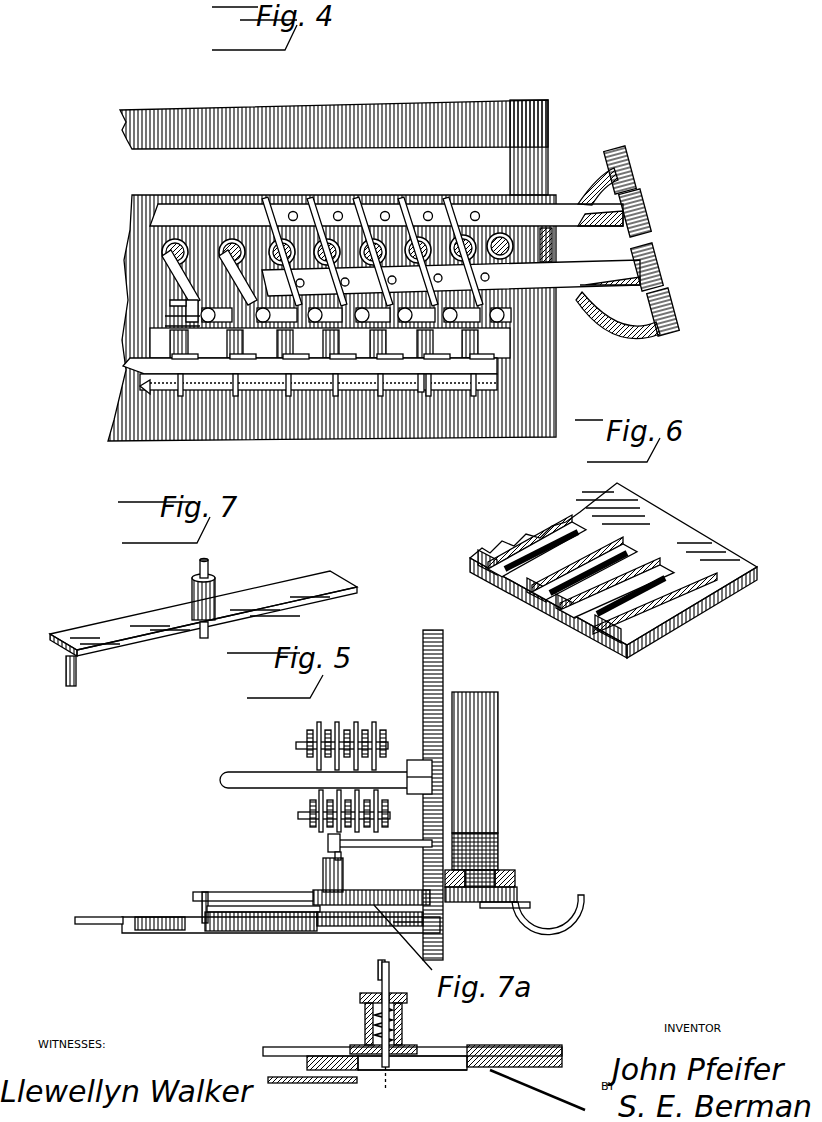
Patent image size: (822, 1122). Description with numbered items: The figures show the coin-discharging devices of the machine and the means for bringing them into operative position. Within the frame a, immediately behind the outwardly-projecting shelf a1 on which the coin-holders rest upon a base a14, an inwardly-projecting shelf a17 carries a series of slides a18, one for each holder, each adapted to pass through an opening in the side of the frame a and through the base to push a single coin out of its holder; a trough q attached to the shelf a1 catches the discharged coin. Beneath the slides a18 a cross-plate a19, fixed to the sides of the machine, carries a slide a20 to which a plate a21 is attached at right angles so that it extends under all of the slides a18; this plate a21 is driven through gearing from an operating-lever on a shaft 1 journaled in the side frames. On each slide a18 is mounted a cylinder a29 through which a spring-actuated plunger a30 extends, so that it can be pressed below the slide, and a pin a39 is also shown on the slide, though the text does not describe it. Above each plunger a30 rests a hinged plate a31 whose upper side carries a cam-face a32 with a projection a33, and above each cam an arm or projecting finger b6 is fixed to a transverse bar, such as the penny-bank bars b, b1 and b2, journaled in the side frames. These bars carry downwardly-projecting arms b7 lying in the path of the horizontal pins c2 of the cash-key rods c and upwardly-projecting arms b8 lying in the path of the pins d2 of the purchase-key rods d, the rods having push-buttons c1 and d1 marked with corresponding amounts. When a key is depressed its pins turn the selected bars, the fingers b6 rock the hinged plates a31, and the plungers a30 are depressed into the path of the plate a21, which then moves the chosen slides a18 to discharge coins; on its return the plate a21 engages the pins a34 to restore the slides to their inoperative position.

In FIG. 4, the frame a is at (416, 112).
In FIG. 5, the frame a is at (443, 663).
In FIG. 6, the outwardly-projecting shelf a1 is at (668, 520).
In FIG. 5, the outwardly-projecting shelf a1 is at (518, 893).
In FIG. 5, the base a14 is at (515, 872).
In FIG. 6, the inwardly-projecting shelf a17 is at (648, 645).
In FIG. 5, the inwardly-projecting shelf a17 is at (371, 927).
In FIG. 7A, the inwardly-projecting shelf a17 is at (447, 1060).
In FIG. 4, the coin-discharge slide a18 is at (278, 380).
In FIG. 7, the coin-discharge slide a18 is at (300, 582).
In FIG. 5, the coin-discharge slide a18 is at (228, 892).
In FIG. 7A, the coin-discharge slide a18 is at (512, 1047).
In FIG. 5, the cross-plate a19 is at (194, 927).
In FIG. 5, the slide a20 is at (101, 917).
In FIG. 4, the plate a21 is at (220, 384).
In FIG. 5, the plate a21 is at (281, 928).
In FIG. 7A, the plate a21 is at (332, 1084).
In FIG. 4, the cylinder a29 is at (170, 347).
In FIG. 7, the cylinder a29 is at (216, 598).
In FIG. 5, the cylinder a29 is at (345, 876).
In FIG. 7A, the cylinder a29 is at (403, 1015).
In FIG. 4, the spring-actuated plunger a30 is at (170, 327).
In FIG. 7, the spring-actuated plunger a30 is at (199, 571).
In FIG. 5, the spring-actuated plunger a30 is at (399, 967).
In FIG. 7A, the spring-actuated plunger a30 is at (385, 1026).
In FIG. 4, the hinged plate a31 is at (170, 318).
In FIG. 4, the cam-face a32 is at (180, 306).
In FIG. 4, the projection a33 is at (190, 318).
In FIG. 4, the pin a34 is at (142, 389).
In FIG. 7, the pin a34 is at (67, 684).
In FIG. 5, the pin a34 is at (200, 906).
In FIG. 4, the pin a39 is at (380, 343).
In FIG. 7, the pin a39 is at (203, 636).
In FIG. 5, the pin a39 is at (323, 858).
In FIG. 4, the transverse bar b is at (466, 222).
In FIG. 5, the transverse bar b is at (276, 777).
In FIG. 4, the transverse bar b1 is at (423, 214).
In FIG. 4, the transverse bar b2 is at (375, 212).
In FIG. 4, the arm or projecting finger b6 is at (208, 244).
In FIG. 5, the arm or projecting finger b6 is at (422, 822).
In FIG. 4, the downwardly-projecting arm b7 is at (512, 298).
In FIG. 5, the downwardly-projecting arm b7 is at (328, 833).
In FIG. 4, the upwardly-projecting arm b8 is at (316, 214).
In FIG. 5, the upwardly-projecting arm b8 is at (328, 735).
In FIG. 4, the cash-key rod c is at (451, 266).
In FIG. 5, the cash-key rod c is at (310, 814).
In FIG. 4, the push-button c1 is at (662, 279).
In FIG. 4, the pin c2 is at (443, 278).
In FIG. 5, the pin c2 is at (305, 815).
In FIG. 4, the purchase-key rod d is at (562, 204).
In FIG. 5, the purchase-key rod d is at (366, 732).
In FIG. 4, the push-button d1 is at (632, 168).
In FIG. 4, the pin d2 is at (288, 216).
In FIG. 5, the pin d2 is at (300, 745).
In FIG. 4, the shaft 1 is at (552, 241).
In FIG. 5, the trough q is at (586, 906).